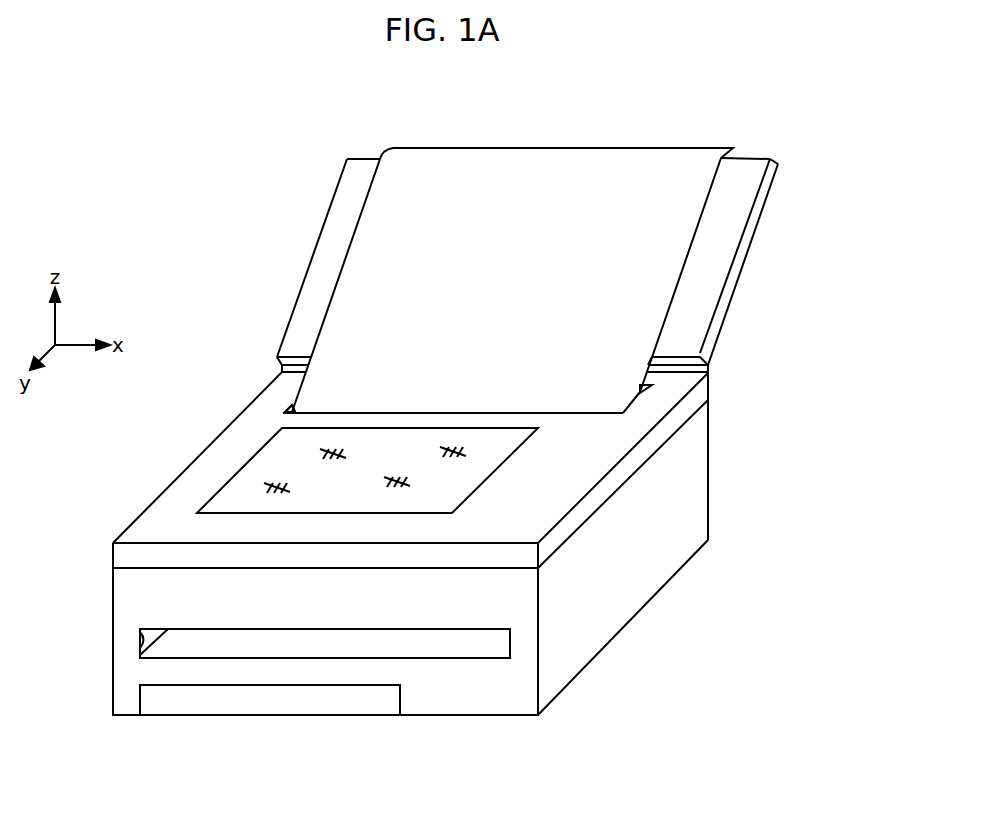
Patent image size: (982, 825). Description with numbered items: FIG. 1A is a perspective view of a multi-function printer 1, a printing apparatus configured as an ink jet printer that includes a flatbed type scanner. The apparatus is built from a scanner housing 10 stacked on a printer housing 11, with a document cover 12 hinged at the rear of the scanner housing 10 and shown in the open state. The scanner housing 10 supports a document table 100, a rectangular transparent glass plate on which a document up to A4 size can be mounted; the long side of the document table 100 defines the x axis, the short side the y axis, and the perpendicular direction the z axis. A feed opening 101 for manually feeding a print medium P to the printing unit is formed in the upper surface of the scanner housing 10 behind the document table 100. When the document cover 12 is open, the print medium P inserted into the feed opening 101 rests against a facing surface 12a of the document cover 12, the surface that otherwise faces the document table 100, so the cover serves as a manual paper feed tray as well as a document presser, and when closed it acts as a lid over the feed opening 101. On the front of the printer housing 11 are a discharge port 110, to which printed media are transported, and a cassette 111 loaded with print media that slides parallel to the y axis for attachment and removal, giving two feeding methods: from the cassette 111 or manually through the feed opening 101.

The multi-function printer 1 is at (286, 157).
The scanner housing 10 is at (703, 390).
The printer housing 11 is at (703, 448).
The document cover 12 is at (760, 228).
The facing surface 12a is at (740, 177).
The print medium P is at (650, 160).
The document table 100 is at (233, 498).
The feed opening 101 is at (293, 410).
The discharge port 110 is at (142, 650).
The cassette 111 is at (162, 691).